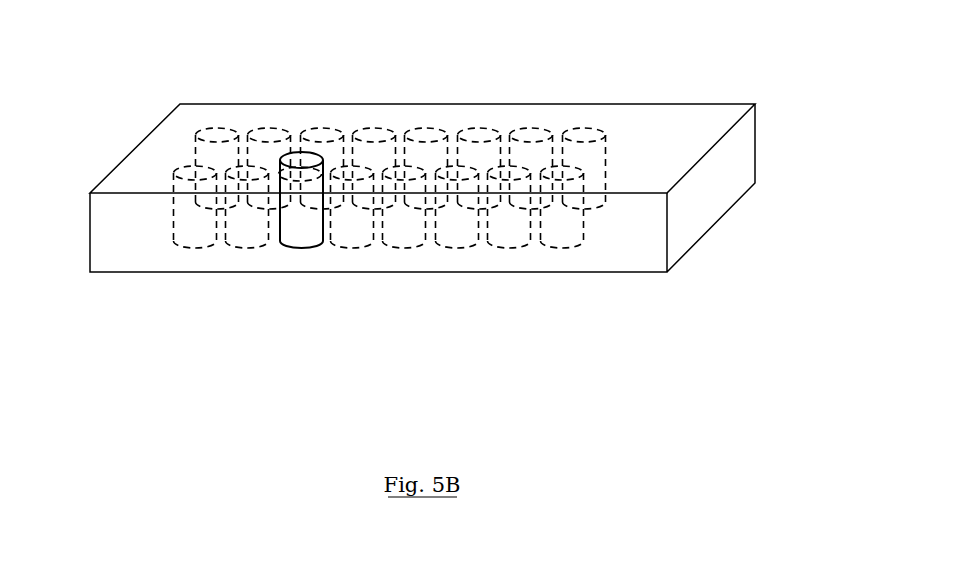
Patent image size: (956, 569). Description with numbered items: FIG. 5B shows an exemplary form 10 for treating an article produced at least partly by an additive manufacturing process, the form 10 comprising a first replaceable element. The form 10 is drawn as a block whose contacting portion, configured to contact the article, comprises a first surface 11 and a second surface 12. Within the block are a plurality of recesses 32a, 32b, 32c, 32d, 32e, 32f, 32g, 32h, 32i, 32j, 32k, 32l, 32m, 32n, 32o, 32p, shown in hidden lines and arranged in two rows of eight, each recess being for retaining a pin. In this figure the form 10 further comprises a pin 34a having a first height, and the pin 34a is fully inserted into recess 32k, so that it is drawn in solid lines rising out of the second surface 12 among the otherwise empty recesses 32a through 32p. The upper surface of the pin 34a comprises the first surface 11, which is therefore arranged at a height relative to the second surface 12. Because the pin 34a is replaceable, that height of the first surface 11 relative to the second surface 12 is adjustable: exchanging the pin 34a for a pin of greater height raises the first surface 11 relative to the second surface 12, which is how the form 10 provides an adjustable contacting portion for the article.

The form 10 is at (88, 48).
The first surface 11 is at (314, 153).
The second surface 12 is at (638, 147).
The recess 32a is at (217, 157).
The recess 32b is at (269, 157).
The recess 32c is at (328, 157).
The recess 32d is at (374, 157).
The recess 32e is at (426, 157).
The recess 32f is at (479, 157).
The recess 32g is at (531, 157).
The recess 32h is at (584, 157).
The recess 32i is at (195, 220).
The recess 32j is at (247, 220).
The recess 32k is at (300, 220).
The recess 32l is at (352, 220).
The recess 32m is at (404, 220).
The recess 32n is at (457, 220).
The recess 32o is at (509, 220).
The recess 32p is at (562, 220).
The pin 34a is at (297, 168).